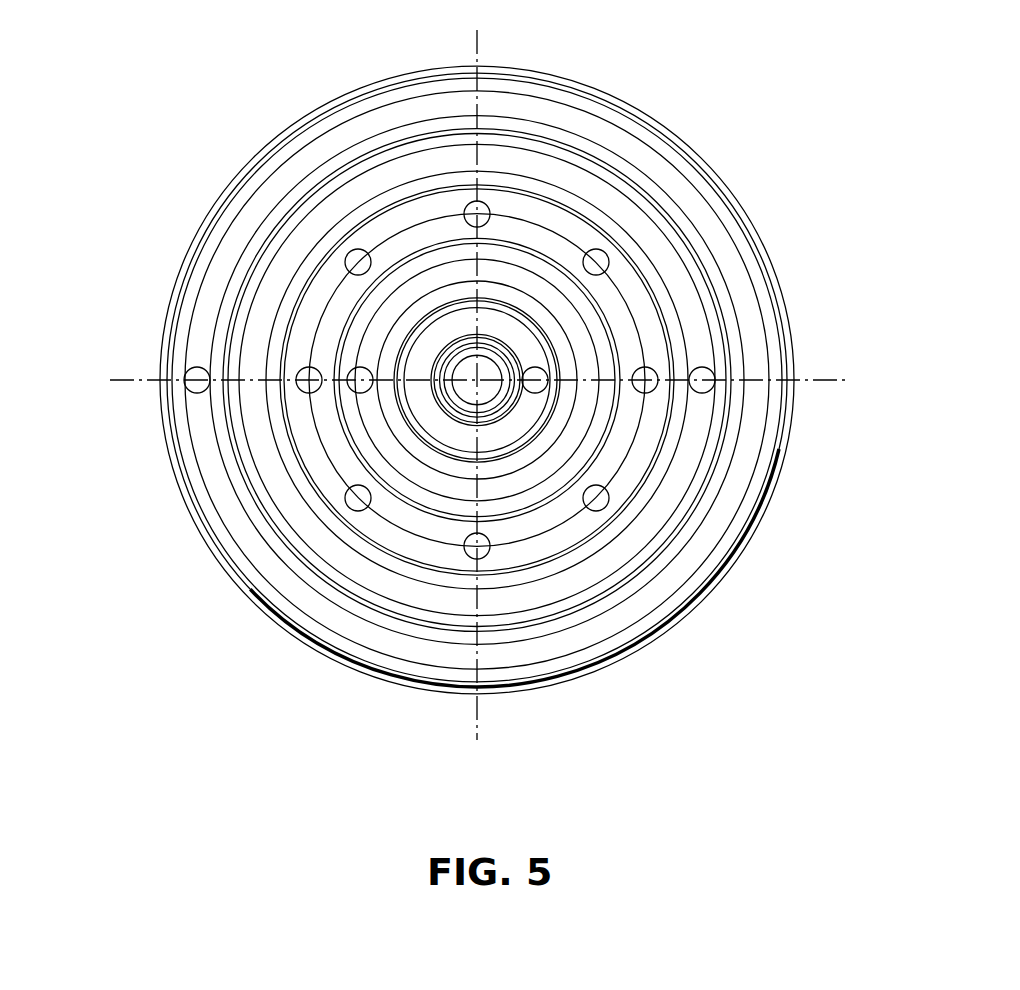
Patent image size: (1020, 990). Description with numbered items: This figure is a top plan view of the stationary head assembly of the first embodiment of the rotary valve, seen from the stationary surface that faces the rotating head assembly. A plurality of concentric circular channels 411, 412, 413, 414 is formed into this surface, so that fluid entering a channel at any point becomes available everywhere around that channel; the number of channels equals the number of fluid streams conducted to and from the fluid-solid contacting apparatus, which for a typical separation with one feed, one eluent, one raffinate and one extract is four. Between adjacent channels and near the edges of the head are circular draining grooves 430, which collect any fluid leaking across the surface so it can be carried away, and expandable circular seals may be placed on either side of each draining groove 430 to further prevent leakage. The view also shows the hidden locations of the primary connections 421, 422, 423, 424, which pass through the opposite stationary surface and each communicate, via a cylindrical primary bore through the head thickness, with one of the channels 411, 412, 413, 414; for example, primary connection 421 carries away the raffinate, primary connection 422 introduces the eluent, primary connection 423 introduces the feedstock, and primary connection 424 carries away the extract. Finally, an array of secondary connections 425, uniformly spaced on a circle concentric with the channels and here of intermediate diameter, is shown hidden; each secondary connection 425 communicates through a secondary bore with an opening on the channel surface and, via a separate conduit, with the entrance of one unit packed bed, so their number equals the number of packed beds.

The concentric circular channel 411 is at (523, 105).
The concentric circular channel 412 is at (545, 165).
The concentric circular channel 413 is at (528, 273).
The concentric circular channel 414 is at (597, 280).
The primary connection 421 is at (186, 373).
The primary connection 422 is at (712, 388).
The primary connection 423 is at (349, 373).
The primary connection 424 is at (545, 389).
The secondary connection 425 is at (349, 253).
The circular draining groove 430 is at (447, 464).